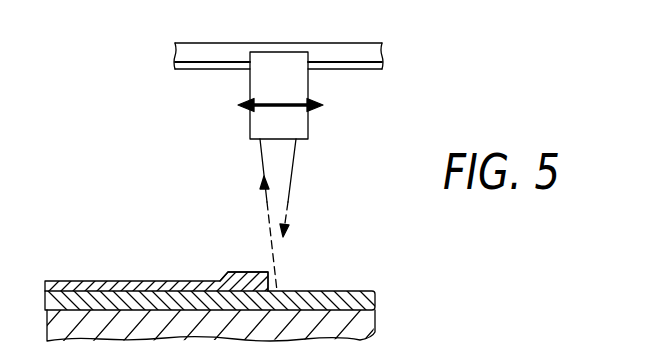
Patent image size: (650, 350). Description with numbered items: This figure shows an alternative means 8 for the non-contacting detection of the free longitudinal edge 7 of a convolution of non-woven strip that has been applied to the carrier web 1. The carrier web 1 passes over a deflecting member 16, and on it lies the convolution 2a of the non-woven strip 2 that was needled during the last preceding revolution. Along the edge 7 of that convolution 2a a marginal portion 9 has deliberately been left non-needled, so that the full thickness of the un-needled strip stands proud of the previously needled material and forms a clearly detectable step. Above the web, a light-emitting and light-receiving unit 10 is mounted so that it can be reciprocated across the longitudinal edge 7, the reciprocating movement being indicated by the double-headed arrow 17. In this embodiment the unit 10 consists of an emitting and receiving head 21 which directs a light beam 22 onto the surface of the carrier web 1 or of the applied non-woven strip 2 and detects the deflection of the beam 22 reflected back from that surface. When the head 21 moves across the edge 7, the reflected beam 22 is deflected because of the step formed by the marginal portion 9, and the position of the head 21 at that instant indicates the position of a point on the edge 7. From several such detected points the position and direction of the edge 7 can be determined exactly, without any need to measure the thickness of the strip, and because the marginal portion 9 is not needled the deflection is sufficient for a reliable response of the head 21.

The carrier web 1 is at (252, 282).
The non-woven strip 2 is at (163, 255).
The convolution of the non-woven strip 2a is at (140, 287).
The free longitudinal edge 7 is at (278, 290).
The means for non-contacting scanning 8 is at (243, 125).
The marginal portion 9 is at (250, 272).
The light-emitting and light-receiving unit 10 is at (314, 138).
The deflecting member 16 is at (350, 327).
The double-headed arrow 17 is at (282, 100).
The emitting and receiving head 21 is at (298, 83).
The light beam 22 is at (266, 199).